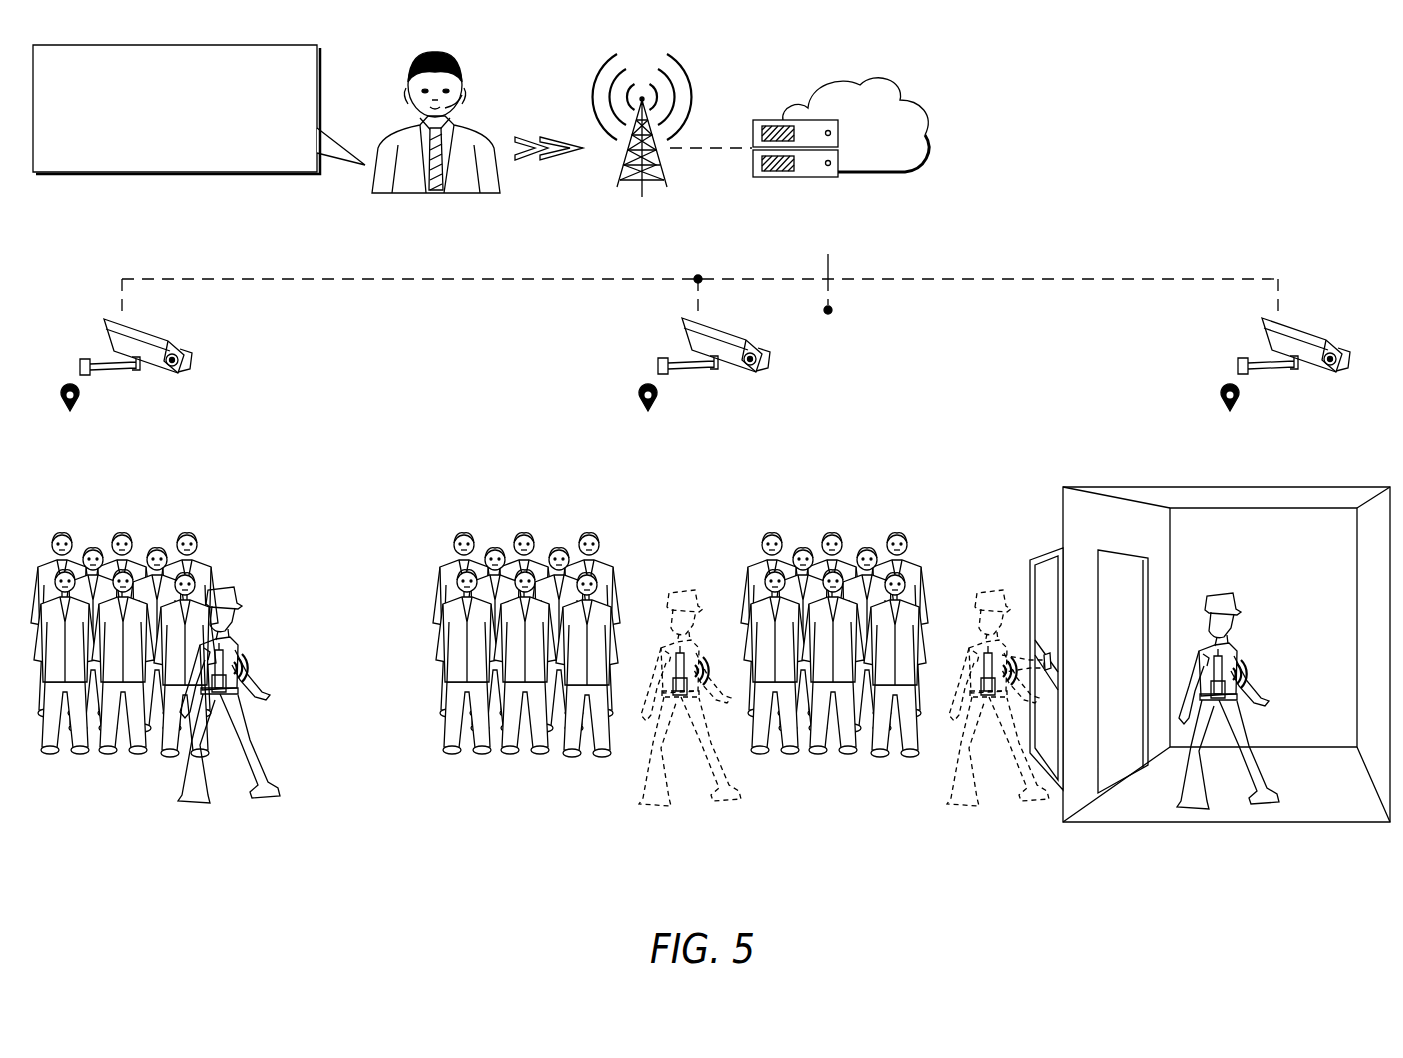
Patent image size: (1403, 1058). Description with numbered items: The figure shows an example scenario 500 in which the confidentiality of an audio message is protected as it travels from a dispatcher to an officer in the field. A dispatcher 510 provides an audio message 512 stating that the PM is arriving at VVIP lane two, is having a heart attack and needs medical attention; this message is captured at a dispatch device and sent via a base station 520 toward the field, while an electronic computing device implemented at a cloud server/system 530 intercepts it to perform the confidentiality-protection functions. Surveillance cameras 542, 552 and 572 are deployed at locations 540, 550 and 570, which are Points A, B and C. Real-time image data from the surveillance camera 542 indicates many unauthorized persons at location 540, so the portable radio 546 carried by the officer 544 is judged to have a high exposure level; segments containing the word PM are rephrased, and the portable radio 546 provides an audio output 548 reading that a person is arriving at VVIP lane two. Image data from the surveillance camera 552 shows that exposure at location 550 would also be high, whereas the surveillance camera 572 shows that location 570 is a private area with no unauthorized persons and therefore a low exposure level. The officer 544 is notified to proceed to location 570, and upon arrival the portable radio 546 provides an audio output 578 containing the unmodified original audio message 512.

The example scenario 500 is at (1098, 152).
The dispatcher 510 is at (464, 82).
The audio message 512 is at (322, 72).
The base station 520 is at (698, 96).
The cloud server/system 530 is at (932, 143).
The location 540 is at (168, 410).
The surveillance camera 542 is at (152, 332).
The officer 544 is at (232, 598).
The portable radio 546 is at (230, 714).
The audio output 548 is at (300, 862).
The location 550 is at (748, 410).
The surveillance camera 552 is at (730, 332).
The location 570 is at (1328, 410).
The surveillance camera 572 is at (1262, 328).
The audio output 578 is at (1072, 885).